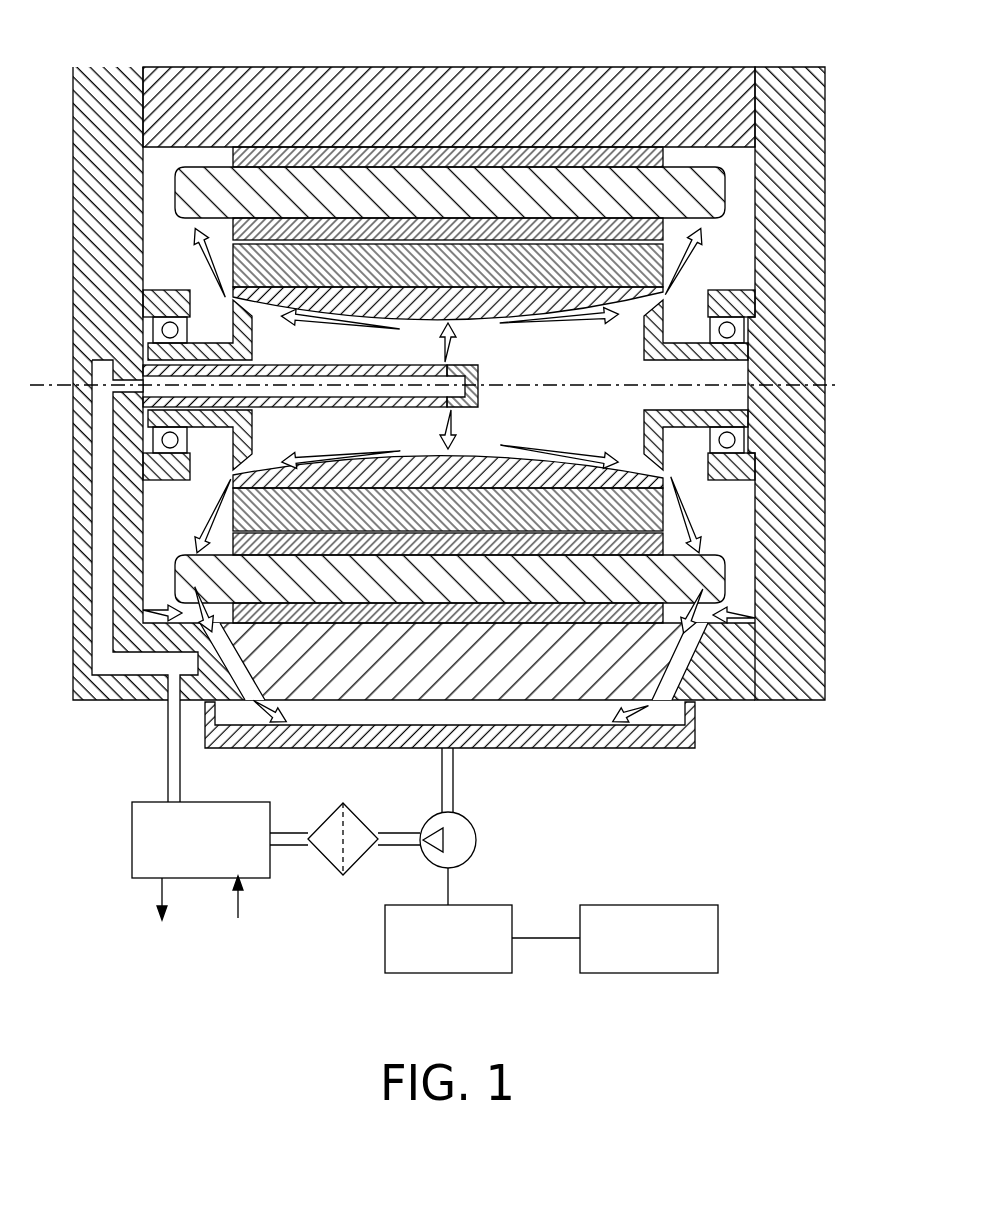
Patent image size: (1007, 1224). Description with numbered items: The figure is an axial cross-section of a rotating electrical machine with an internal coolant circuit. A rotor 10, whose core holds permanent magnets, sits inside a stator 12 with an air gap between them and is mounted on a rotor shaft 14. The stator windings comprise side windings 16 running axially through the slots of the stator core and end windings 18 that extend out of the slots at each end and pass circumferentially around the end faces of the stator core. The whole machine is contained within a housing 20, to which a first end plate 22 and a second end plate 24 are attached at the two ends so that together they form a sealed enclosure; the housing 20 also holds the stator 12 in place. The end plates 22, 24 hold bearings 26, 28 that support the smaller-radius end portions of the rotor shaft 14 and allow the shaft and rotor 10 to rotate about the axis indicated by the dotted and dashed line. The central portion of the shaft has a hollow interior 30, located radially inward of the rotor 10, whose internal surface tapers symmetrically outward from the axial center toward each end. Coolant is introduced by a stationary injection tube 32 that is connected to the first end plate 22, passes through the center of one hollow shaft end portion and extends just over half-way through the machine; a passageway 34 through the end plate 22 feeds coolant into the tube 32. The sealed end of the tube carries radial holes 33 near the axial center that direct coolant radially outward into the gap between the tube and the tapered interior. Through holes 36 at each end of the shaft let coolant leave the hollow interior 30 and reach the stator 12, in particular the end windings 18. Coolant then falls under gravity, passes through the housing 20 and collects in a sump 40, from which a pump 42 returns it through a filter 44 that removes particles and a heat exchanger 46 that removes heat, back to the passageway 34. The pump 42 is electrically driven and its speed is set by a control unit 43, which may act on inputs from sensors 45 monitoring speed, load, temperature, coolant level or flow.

The rotor 10 is at (466, 279).
The stator 12 is at (567, 160).
The rotor shaft 14 is at (466, 312).
The side windings 16 is at (466, 204).
The end windings 18 is at (221, 204).
The housing 20 is at (451, 353).
The first end plate 22 is at (88, 184).
The second end plate 24 is at (823, 150).
The bearing 26 is at (153, 318).
The bearing 28 is at (748, 452).
The hollow interior 30 is at (542, 374).
The injection tube 32 is at (338, 408).
The radial holes 33 is at (478, 405).
The passageway 34 is at (78, 504).
The through holes 36 is at (233, 298).
The sump 40 is at (612, 750).
The pump 42 is at (477, 841).
The control unit 43 is at (450, 975).
The filter 44 is at (335, 872).
The sensors 45 is at (643, 975).
The heat exchanger 46 is at (132, 838).